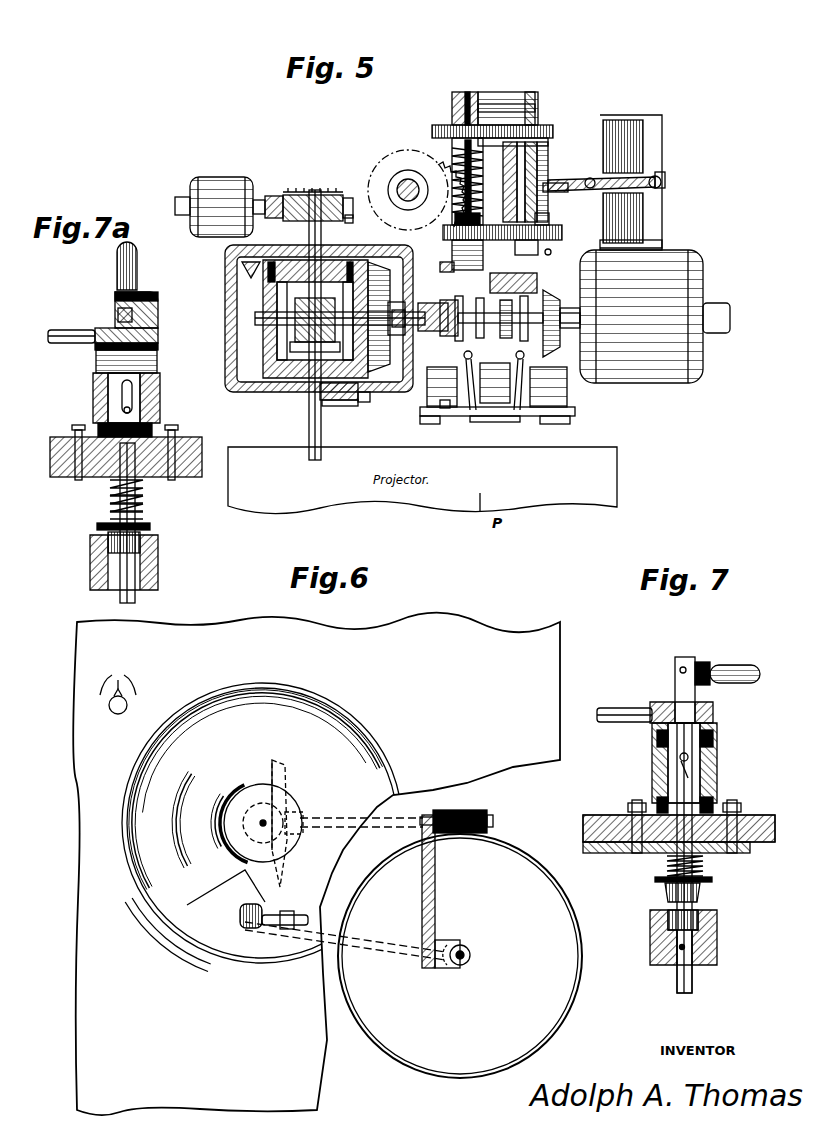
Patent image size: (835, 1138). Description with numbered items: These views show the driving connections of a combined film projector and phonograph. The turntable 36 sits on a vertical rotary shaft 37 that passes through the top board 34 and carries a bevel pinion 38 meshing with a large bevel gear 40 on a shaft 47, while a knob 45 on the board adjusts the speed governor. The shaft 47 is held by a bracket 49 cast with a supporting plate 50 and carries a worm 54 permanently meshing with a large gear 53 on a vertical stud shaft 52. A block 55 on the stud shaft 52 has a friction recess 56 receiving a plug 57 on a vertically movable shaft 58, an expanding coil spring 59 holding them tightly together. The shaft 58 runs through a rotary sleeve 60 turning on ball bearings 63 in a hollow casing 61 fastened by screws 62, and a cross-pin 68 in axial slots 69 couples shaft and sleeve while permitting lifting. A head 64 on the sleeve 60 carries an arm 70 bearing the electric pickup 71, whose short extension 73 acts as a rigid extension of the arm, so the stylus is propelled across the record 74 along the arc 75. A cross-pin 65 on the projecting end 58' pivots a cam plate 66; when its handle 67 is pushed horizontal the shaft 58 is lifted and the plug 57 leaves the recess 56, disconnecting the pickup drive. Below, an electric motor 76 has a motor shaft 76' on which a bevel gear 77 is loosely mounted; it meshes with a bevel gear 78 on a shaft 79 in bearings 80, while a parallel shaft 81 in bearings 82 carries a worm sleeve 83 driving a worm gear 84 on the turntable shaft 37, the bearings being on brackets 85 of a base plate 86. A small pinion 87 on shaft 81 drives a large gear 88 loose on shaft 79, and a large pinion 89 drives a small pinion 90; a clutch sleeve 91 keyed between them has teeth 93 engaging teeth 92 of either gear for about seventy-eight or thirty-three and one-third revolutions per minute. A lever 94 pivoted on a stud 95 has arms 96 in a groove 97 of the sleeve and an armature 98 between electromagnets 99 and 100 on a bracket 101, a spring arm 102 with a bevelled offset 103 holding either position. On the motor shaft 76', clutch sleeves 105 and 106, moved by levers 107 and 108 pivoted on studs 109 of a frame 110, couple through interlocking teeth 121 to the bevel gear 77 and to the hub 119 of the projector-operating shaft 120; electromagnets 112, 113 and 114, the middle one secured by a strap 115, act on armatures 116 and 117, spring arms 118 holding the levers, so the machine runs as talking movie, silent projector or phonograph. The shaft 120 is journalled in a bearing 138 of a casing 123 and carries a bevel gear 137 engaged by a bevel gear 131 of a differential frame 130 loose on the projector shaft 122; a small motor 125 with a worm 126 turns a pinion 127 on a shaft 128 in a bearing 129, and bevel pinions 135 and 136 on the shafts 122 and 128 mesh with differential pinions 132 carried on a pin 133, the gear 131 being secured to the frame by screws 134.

In FIG. 7, the top board 34 is at (600, 822).
In FIG. 6, the top board 34 is at (445, 630).
In FIG. 6, the phonograph turntable 36 is at (292, 684).
In FIG. 5, the vertical rotary shaft 37 is at (405, 185).
In FIG. 6, the vertical rotary shaft 37 is at (262, 820).
In FIG. 6, the bevel pinion 38 is at (222, 795).
In FIG. 6, the large bevel gear 40 is at (279, 760).
In FIG. 6, the knob or finger piece 45 is at (118, 714).
In FIG. 6, the shaft 47 is at (422, 817).
In FIG. 6, the bracket 49 is at (435, 885).
In FIG. 7A, the supporting plate 50 is at (65, 477).
In FIG. 7, the supporting plate 50 is at (605, 853).
In FIG. 6, the supporting plate 50 is at (448, 968).
In FIG. 7A, the vertical stud shaft 52 is at (135, 585).
In FIG. 7, the vertical stud shaft 52 is at (677, 975).
In FIG. 6, the vertical stud shaft 52 is at (467, 947).
In FIG. 6, the large gear 53 is at (400, 1050).
In FIG. 6, the worm or spiral pinion 54 is at (470, 810).
In FIG. 7A, the block 55 is at (158, 566).
In FIG. 7, the block 55 is at (717, 942).
In FIG. 7A, the friction recess 56 is at (140, 545).
In FIG. 7, the friction recess 56 is at (698, 918).
In FIG. 7A, the plug 57 is at (100, 540).
In FIG. 7, the plug 57 is at (700, 892).
In FIG. 7A, the vertically movable shaft 58 is at (149, 496).
In FIG. 7, the vertically movable shaft 58 is at (728, 858).
In FIG. 7, the upper projecting end of shaft 58' is at (667, 671).
In FIG. 7A, the expanding coil spring 59 is at (110, 500).
In FIG. 7, the expanding coil spring 59 is at (703, 865).
In FIG. 7A, the rotary sleeve 60 is at (108, 393).
In FIG. 7, the rotary sleeve 60 is at (700, 770).
In FIG. 7A, the hollow casing 61 is at (160, 400).
In FIG. 7, the hollow casing 61 is at (652, 755).
In FIG. 7A, the screws or bolts 62 is at (70, 440).
In FIG. 7, the screws or bolts 62 is at (775, 828).
In FIG. 7A, the ball bearings 63 is at (158, 380).
In FIG. 7, the ball bearings 63 is at (713, 732).
In FIG. 7A, the head or block 64 is at (158, 335).
In FIG. 7, the head or block 64 is at (662, 702).
In FIG. 7A, the cross-pin 65 is at (118, 314).
In FIG. 7, the cross-pin 65 is at (685, 666).
In FIG. 7A, the cam plate 66 is at (140, 305).
In FIG. 7, the cam plate 66 is at (704, 685).
In FIG. 7A, the handle 67 is at (122, 260).
In FIG. 7, the handle 67 is at (735, 665).
In FIG. 7A, the cross-pin 68 is at (123, 410).
In FIG. 7, the cross-pin 68 is at (680, 762).
In FIG. 7A, the axial slots 69 is at (122, 385).
In FIG. 7, the axial slots 69 is at (688, 757).
In FIG. 7A, the arm 70 is at (50, 333).
In FIG. 7, the arm 70 is at (606, 708).
In FIG. 6, the arm 70 is at (382, 940).
In FIG. 6, the electric pickup 71 is at (245, 920).
In FIG. 6, the short extension 73 is at (268, 925).
In FIG. 6, the record 74 is at (258, 700).
In FIG. 6, the dotted line 75 is at (200, 960).
In FIG. 5, the electric motor 76 is at (655, 329).
In FIG. 5, the motor shaft 76' is at (374, 299).
In FIG. 5, the bevel gear 77 is at (565, 350).
In FIG. 5, the bevel gear 78 is at (550, 290).
In FIG. 5, the shaft 79 is at (480, 216).
In FIG. 5, the bearings 80 is at (540, 110).
In FIG. 5, the shaft 81 is at (465, 92).
In FIG. 5, the bearings 82 is at (453, 105).
In FIG. 5, the worm or spiral sleeve 83 is at (455, 145).
In FIG. 5, the worm gear 84 is at (420, 150).
In FIG. 5, the brackets 85 is at (520, 98).
In FIG. 5, the base plate 86 is at (495, 110).
In FIG. 5, the small pinion 87 is at (440, 262).
In FIG. 5, the large pinion or gear wheel 88 is at (555, 216).
In FIG. 5, the gear wheel or large pinion 89 is at (490, 95).
In FIG. 5, the small pinion 90 is at (535, 138).
In FIG. 5, the slidable clutch sleeve 91 is at (548, 180).
In FIG. 5, the teeth 92 is at (545, 150).
In FIG. 5, the teeth 93 is at (548, 160).
In FIG. 5, the lever 94 is at (590, 178).
In FIG. 5, the stud 95 is at (570, 192).
In FIG. 5, the arms 96 is at (588, 180).
In FIG. 5, the groove 97 is at (503, 185).
In FIG. 5, the magnetic armature extension 98 is at (657, 176).
In FIG. 5, the electromagnet 99 is at (643, 138).
In FIG. 5, the electromagnet 100 is at (643, 212).
In FIG. 5, the U-shaped bracket 101 is at (655, 248).
In FIG. 5, the spring arm 102 is at (662, 190).
In FIG. 5, the bevelled cam or offset 103 is at (665, 176).
In FIG. 5, the clutch sleeve 105 is at (495, 283).
In FIG. 5, the clutch sleeve 106 is at (450, 300).
In FIG. 5, the lever 107 is at (552, 407).
In FIG. 5, the lever 108 is at (440, 407).
In FIG. 5, the studs 109 is at (516, 355).
In FIG. 5, the frame 110 is at (422, 414).
In FIG. 5, the electromagnet 112 is at (555, 424).
In FIG. 5, the electromagnet 113 is at (428, 424).
In FIG. 5, the electromagnet 114 is at (440, 408).
In FIG. 5, the strap 115 is at (495, 404).
In FIG. 5, the armature 116 is at (516, 412).
In FIG. 5, the armature 117 is at (471, 412).
In FIG. 5, the spring arms 118 is at (495, 422).
In FIG. 5, the hub 119 is at (370, 403).
In FIG. 5, the rotary shaft 120 is at (345, 406).
In FIG. 5, the interlocking clutch teeth 121 is at (552, 254).
In FIG. 5, the projector shaft 122 is at (309, 418).
In FIG. 5, the casing 123 is at (225, 270).
In FIG. 5, the small electric motor 125 is at (222, 177).
In FIG. 5, the driving worm or spiral 126 is at (320, 186).
In FIG. 5, the small gear or pinion 127 is at (278, 196).
In FIG. 5, the shaft 128 is at (348, 198).
In FIG. 5, the bearing 129 is at (353, 219).
In FIG. 5, the frame 130 is at (263, 300).
In FIG. 5, the bevel gear 131 is at (265, 290).
In FIG. 5, the bevel pinions 132 is at (296, 338).
In FIG. 5, the bolt or pin 133 is at (263, 320).
In FIG. 5, the screws 134 is at (280, 243).
In FIG. 5, the bevel pinion 135 is at (300, 352).
In FIG. 5, the bevel pinion 136 is at (249, 281).
In FIG. 5, the bevel gear 137 is at (339, 399).
In FIG. 5, the bearing 138 is at (398, 302).